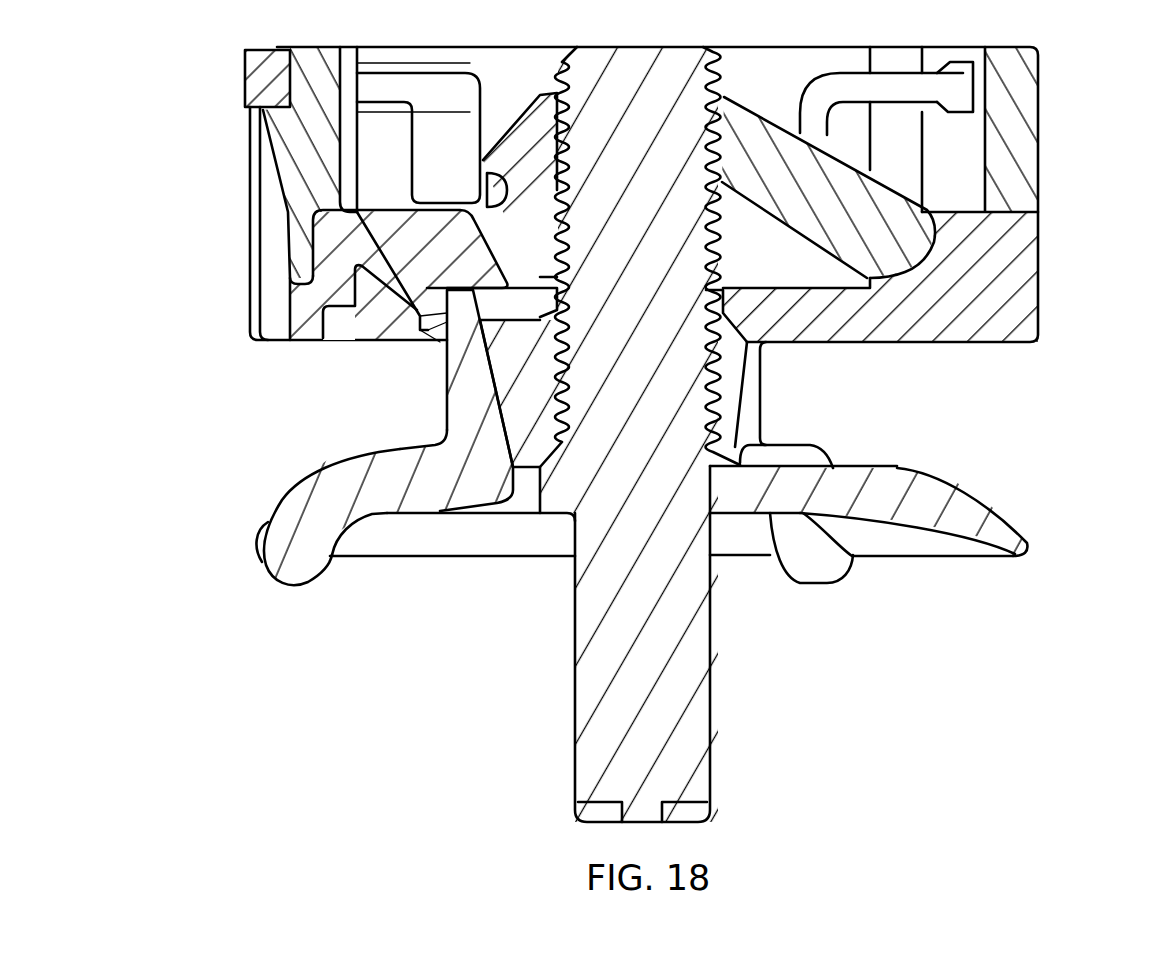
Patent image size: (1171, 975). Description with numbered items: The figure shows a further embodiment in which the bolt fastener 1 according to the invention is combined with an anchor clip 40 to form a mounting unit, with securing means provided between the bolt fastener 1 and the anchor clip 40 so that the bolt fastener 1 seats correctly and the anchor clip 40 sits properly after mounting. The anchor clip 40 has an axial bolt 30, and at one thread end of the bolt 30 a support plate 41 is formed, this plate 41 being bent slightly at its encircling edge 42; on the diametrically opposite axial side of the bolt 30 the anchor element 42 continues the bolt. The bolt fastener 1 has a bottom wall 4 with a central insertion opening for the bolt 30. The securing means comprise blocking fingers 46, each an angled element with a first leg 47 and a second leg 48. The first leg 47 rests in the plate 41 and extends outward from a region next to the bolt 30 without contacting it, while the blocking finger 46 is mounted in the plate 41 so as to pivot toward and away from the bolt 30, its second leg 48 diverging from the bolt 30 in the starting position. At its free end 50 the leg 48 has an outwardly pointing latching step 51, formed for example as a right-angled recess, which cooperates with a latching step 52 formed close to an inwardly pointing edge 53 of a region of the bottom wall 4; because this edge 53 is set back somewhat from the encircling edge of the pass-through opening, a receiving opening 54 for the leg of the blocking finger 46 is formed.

The bolt fastener 1 is at (1084, 256).
The bottom wall 4 is at (403, 277).
The bolt 30 is at (658, 296).
The anchor clip 40 is at (1080, 504).
The support plate 41 is at (286, 580).
The encircling edge 42 is at (1028, 546).
The blocking finger 46 is at (457, 407).
The first leg 47 is at (333, 488).
The second leg 48 is at (486, 363).
The free end 50 is at (452, 318).
The latching step 51 is at (445, 318).
The latching step 52 is at (437, 303).
The inwardly pointing edge 53 is at (448, 300).
The receiving opening 54 is at (525, 326).